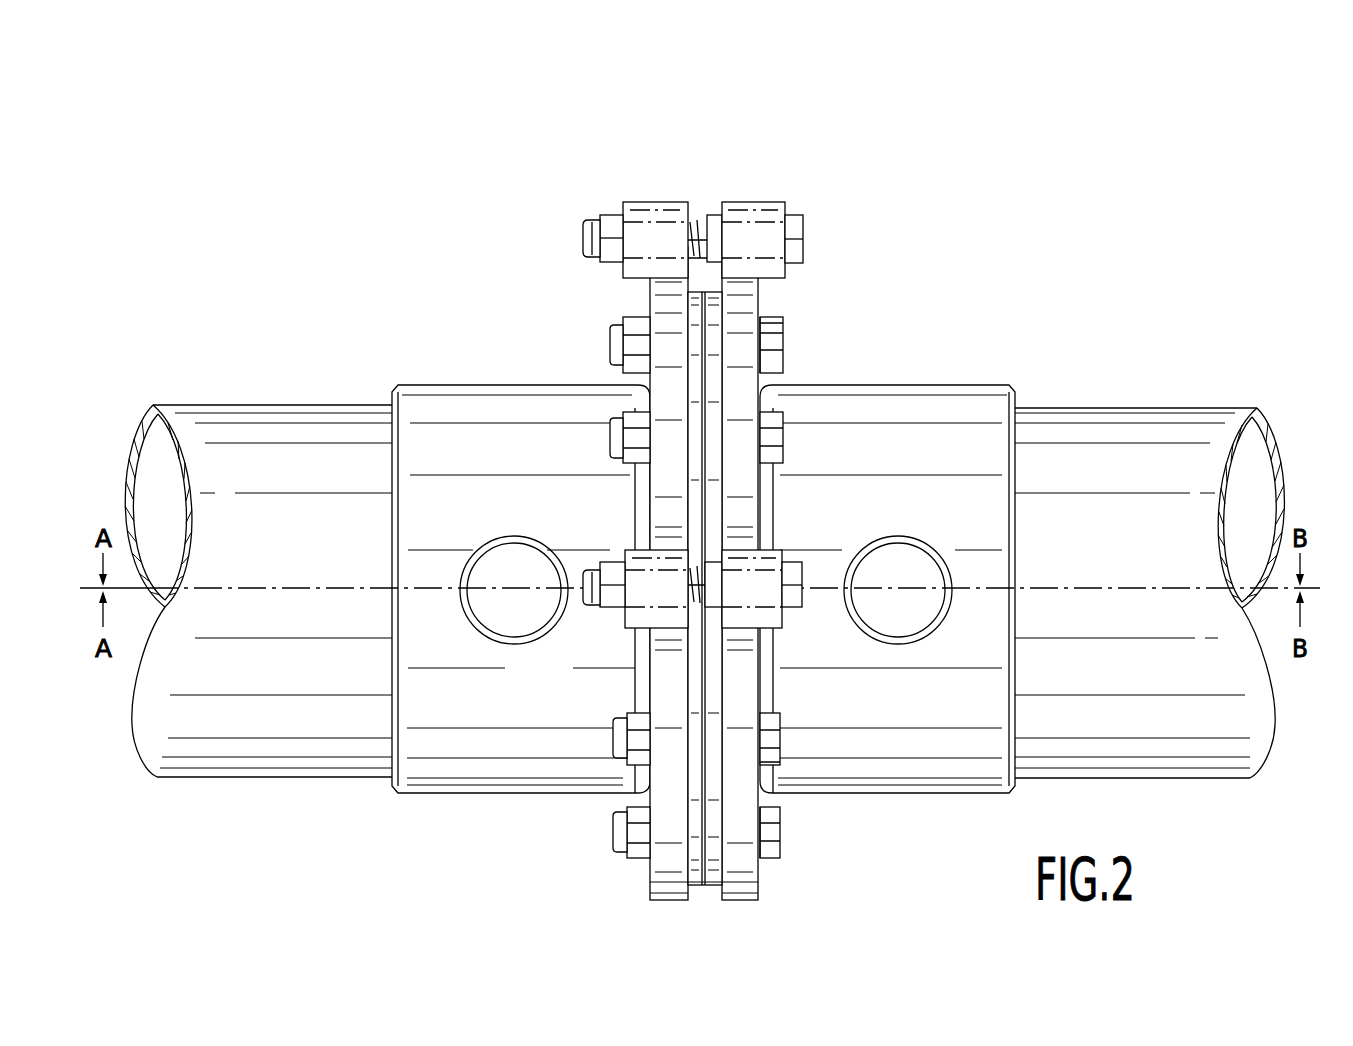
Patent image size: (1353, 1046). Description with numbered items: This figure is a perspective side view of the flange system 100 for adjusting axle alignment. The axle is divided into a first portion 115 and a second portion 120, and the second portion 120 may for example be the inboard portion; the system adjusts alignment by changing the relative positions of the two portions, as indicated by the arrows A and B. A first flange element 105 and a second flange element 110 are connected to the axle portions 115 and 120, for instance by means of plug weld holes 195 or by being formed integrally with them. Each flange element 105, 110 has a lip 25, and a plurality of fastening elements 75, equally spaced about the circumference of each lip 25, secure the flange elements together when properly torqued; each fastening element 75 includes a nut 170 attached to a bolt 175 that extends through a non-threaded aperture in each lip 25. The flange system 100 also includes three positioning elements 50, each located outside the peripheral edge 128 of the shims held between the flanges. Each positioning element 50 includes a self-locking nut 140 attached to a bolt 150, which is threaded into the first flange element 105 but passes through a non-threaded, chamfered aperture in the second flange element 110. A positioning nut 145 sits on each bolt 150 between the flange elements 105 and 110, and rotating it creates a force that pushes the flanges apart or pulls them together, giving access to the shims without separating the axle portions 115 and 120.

The flange system 100 is at (768, 150).
The first flange element 105 is at (980, 395).
The second flange element 110 is at (455, 393).
The first portion 115 is at (1178, 410).
The second portion 120 is at (247, 768).
The lip 25 is at (657, 882).
The positioning element 50 is at (684, 412).
The fastening element 75 is at (704, 574).
The peripheral edge 128 is at (697, 286).
The self-locking nut 140 is at (606, 226).
The positioning nut 145 is at (717, 218).
The bolt 150 is at (800, 247).
The nut 170 is at (628, 323).
The bolt 175 is at (782, 328).
The plug weld hole 195 is at (910, 571).